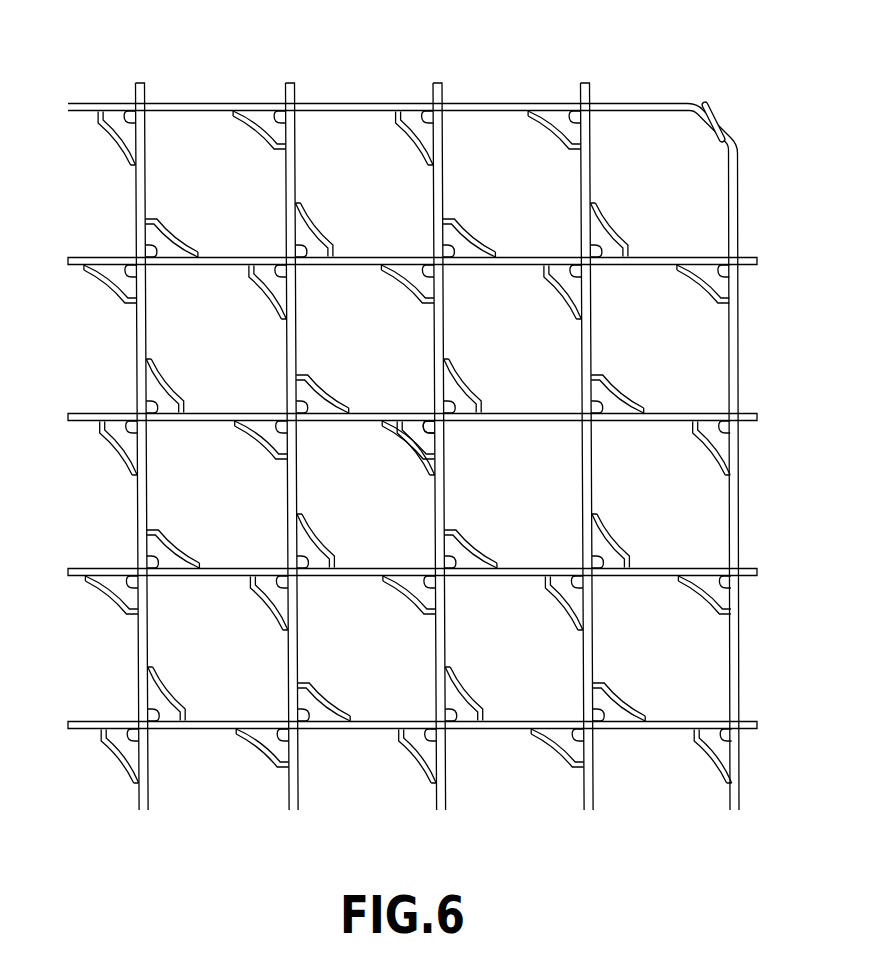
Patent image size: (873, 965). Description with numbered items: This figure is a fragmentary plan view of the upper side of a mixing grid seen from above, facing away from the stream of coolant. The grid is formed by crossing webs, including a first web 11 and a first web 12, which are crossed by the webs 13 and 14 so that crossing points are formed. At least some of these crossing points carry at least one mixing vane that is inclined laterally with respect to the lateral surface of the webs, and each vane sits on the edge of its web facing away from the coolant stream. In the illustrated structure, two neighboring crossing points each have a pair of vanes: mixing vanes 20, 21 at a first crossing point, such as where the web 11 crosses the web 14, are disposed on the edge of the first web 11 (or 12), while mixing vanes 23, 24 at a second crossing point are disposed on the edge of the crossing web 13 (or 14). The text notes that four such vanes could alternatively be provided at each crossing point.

The web 11 is at (743, 563).
The web 12 is at (672, 413).
The web 13 is at (295, 88).
The web 14 is at (442, 85).
The mixing vane 20 is at (265, 434).
The mixing vane 21 is at (315, 405).
The mixing vane 23 is at (420, 133).
The mixing vane 24 is at (453, 388).